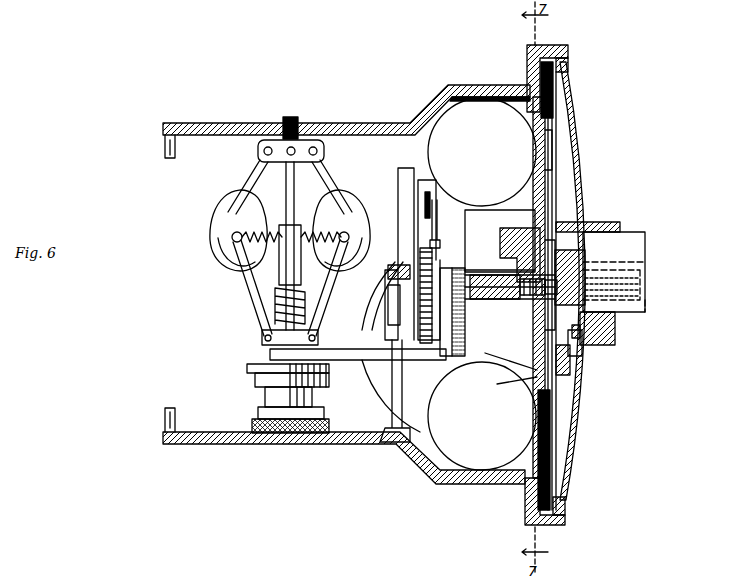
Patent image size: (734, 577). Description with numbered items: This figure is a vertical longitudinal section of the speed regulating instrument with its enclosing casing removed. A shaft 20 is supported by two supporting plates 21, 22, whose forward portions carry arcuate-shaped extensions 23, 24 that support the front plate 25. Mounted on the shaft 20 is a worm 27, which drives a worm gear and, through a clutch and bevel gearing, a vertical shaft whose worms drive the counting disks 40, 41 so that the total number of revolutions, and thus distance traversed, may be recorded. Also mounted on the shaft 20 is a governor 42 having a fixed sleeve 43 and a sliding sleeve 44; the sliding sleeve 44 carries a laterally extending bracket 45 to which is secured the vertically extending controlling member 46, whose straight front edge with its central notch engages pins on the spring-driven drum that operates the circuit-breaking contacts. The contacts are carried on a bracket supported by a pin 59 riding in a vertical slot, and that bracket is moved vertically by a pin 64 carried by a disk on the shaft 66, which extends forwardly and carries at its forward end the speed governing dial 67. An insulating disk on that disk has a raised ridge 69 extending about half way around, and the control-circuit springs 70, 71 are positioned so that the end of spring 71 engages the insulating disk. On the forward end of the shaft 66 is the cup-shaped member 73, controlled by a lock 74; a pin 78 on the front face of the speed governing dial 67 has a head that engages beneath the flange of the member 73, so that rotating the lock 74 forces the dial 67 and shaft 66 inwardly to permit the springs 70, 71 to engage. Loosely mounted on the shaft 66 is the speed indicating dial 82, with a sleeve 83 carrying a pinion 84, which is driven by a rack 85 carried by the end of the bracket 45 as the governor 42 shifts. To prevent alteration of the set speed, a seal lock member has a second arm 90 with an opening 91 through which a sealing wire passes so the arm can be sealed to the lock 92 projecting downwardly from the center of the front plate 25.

The shaft 20 is at (284, 173).
The supporting plate 21 is at (200, 444).
The supporting plate 22 is at (197, 118).
The arcuate-shaped extension 23 is at (525, 506).
The arcuate-shaped extension 24 is at (527, 58).
The front plate 25 is at (570, 58).
The worm 27 is at (247, 376).
The counting disk 40 is at (482, 416).
The counting disk 41 is at (482, 152).
The governor 42 is at (210, 230).
The fixed sleeve 43 is at (330, 137).
The sliding sleeve 44 is at (262, 338).
The bracket 45 is at (350, 361).
The controlling member 46 is at (375, 283).
The pin 59 is at (391, 391).
The pin 64 is at (410, 254).
The shaft 66 is at (484, 302).
The speed governing dial 67 is at (503, 385).
The raised ridge 69 is at (556, 236).
The spring 70 is at (429, 197).
The spring 71 is at (438, 216).
The cup-shaped member 73 is at (562, 255).
The lock 74 is at (636, 240).
The pin 78 is at (527, 335).
The speed indicating dial 82 is at (556, 468).
The sleeve 83 is at (499, 250).
The pinion 84 is at (500, 257).
The rack 85 is at (439, 290).
The second arm 90 is at (580, 360).
The opening 91 is at (600, 356).
The lock 92 is at (598, 364).